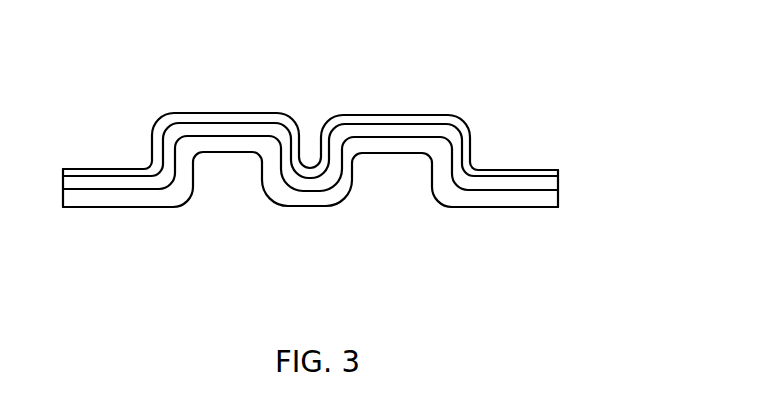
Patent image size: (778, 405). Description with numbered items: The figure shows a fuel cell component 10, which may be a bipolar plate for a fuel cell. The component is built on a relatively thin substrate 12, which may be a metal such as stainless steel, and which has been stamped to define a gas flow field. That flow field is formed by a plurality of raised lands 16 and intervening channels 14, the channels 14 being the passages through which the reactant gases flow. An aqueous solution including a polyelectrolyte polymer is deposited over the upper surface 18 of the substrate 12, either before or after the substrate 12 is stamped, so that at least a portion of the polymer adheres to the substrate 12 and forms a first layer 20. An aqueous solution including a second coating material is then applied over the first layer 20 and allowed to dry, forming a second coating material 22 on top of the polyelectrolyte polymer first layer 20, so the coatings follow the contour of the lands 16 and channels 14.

The fuel cell component 10 is at (550, 126).
The substrate 12 is at (503, 197).
The channels 14 is at (311, 142).
The lands 16 is at (226, 145).
The upper surface 18 is at (95, 188).
The first layer 20 is at (172, 138).
The second coating material 22 is at (498, 172).